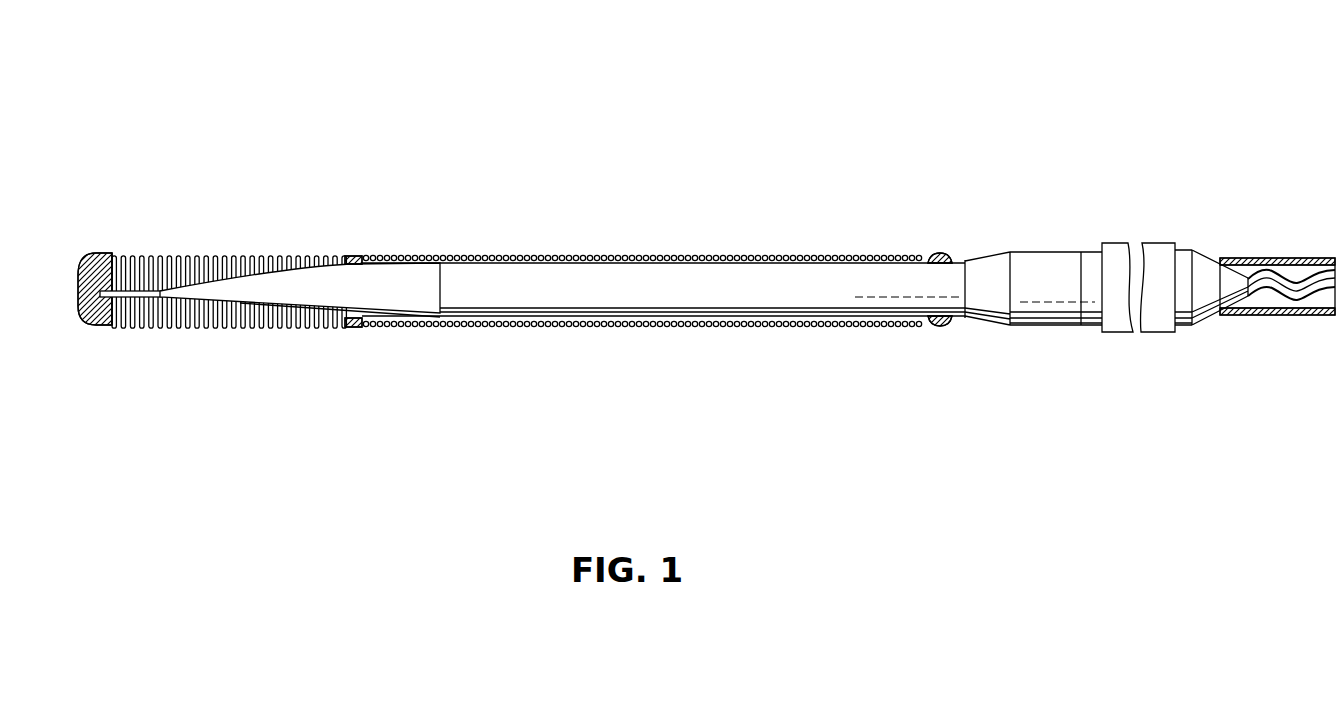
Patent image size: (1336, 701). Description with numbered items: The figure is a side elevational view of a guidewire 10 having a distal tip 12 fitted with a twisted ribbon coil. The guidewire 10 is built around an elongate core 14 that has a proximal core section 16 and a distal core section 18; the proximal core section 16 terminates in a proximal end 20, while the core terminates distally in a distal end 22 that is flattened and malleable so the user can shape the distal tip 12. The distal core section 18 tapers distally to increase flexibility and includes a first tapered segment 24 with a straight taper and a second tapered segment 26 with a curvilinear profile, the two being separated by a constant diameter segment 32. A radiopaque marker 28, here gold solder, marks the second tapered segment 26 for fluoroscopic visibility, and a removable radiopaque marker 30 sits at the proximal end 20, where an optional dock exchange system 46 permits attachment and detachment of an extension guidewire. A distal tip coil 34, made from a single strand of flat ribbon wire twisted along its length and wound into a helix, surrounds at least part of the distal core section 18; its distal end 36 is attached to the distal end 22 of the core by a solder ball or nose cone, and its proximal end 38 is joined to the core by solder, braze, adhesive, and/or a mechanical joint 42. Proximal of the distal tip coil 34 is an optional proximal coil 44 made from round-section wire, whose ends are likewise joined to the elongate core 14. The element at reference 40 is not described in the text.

The guidewire 10 is at (606, 131).
The distal tip 12 is at (118, 205).
The elongate core 14 is at (687, 270).
The proximal core section 16 is at (1090, 262).
The distal core section 18 is at (1050, 268).
The proximal end 20 is at (1202, 280).
The distal end 22 is at (135, 292).
The first tapered segment 24 is at (985, 268).
The second tapered segment 26 is at (397, 256).
The radiopaque marker 28 is at (453, 332).
The removable radiopaque marker 30 is at (1280, 316).
The constant diameter segment 32 is at (630, 300).
The distal tip coil 34 is at (338, 337).
The distal end 36 is at (108, 332).
The proximal end 38 is at (345, 333).
The atraumatic tip cap 40 is at (80, 338).
The mechanical joint 42 is at (360, 254).
The proximal coil 44 is at (372, 338).
The dock exchange system 46 is at (1280, 278).